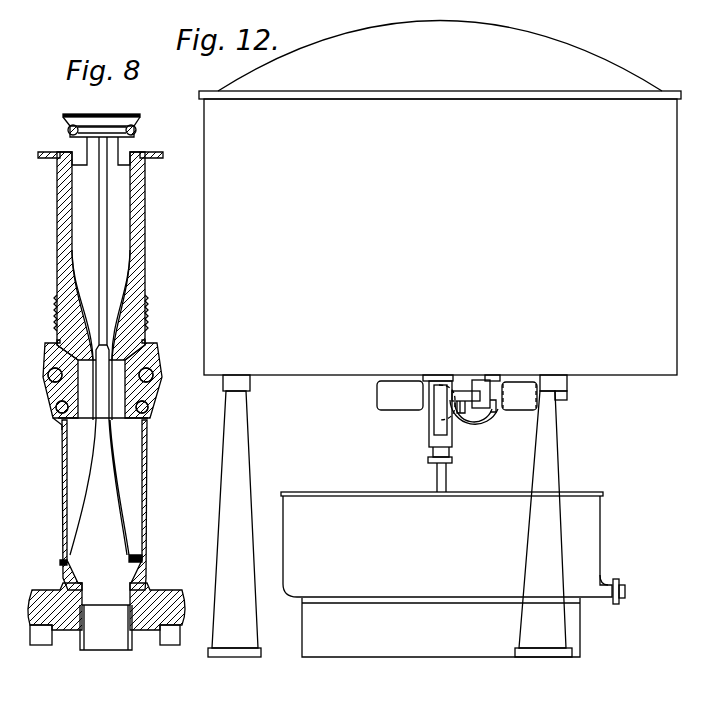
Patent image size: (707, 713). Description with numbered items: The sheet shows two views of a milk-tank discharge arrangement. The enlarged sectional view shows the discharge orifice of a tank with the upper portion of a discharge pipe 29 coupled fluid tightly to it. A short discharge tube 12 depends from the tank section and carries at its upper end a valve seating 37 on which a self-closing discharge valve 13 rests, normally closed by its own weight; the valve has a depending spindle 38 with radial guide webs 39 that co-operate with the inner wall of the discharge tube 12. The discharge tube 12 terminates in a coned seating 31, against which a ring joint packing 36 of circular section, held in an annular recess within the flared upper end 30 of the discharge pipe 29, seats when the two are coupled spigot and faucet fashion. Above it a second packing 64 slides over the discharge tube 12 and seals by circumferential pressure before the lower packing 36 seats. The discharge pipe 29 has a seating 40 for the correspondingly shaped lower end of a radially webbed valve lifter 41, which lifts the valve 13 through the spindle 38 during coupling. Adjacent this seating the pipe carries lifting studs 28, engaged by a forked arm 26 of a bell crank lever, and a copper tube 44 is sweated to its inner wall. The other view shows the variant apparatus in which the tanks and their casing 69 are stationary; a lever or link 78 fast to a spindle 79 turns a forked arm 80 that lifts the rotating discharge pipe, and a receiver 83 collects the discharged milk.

In FIG. 8, the self-closing discharge valve 13 is at (133, 128).
In FIG. 8, the valve seating 37 is at (137, 153).
In FIG. 8, the depending spindle 38 is at (103, 202).
In FIG. 8, the discharge tube 12 is at (137, 235).
In FIG. 8, the radial guide webs 39 is at (125, 281).
In FIG. 8, the second packing 64 is at (63, 365).
In FIG. 8, the flared upper end 30 is at (155, 358).
In FIG. 8, the coned seating 31 is at (147, 421).
In FIG. 8, the ring joint packing 36 is at (58, 422).
In FIG. 8, the radially webbed valve lifter 41 is at (103, 507).
In FIG. 8, the discharge pipe 29 is at (143, 530).
In FIG. 8, the valve lifter seating 40 is at (143, 568).
In FIG. 8, the lifting studs 28 is at (172, 608).
In FIG. 8, the tube 44 is at (87, 652).
In FIG. 8, the forked arm 26 is at (170, 637).
In FIG. 12, the casing 69 is at (440, 198).
In FIG. 12, the lever or link 78 is at (492, 405).
In FIG. 12, the spindle 79 is at (495, 413).
In FIG. 12, the forked arm 80 is at (475, 435).
In FIG. 12, the receiver 83 is at (453, 574).